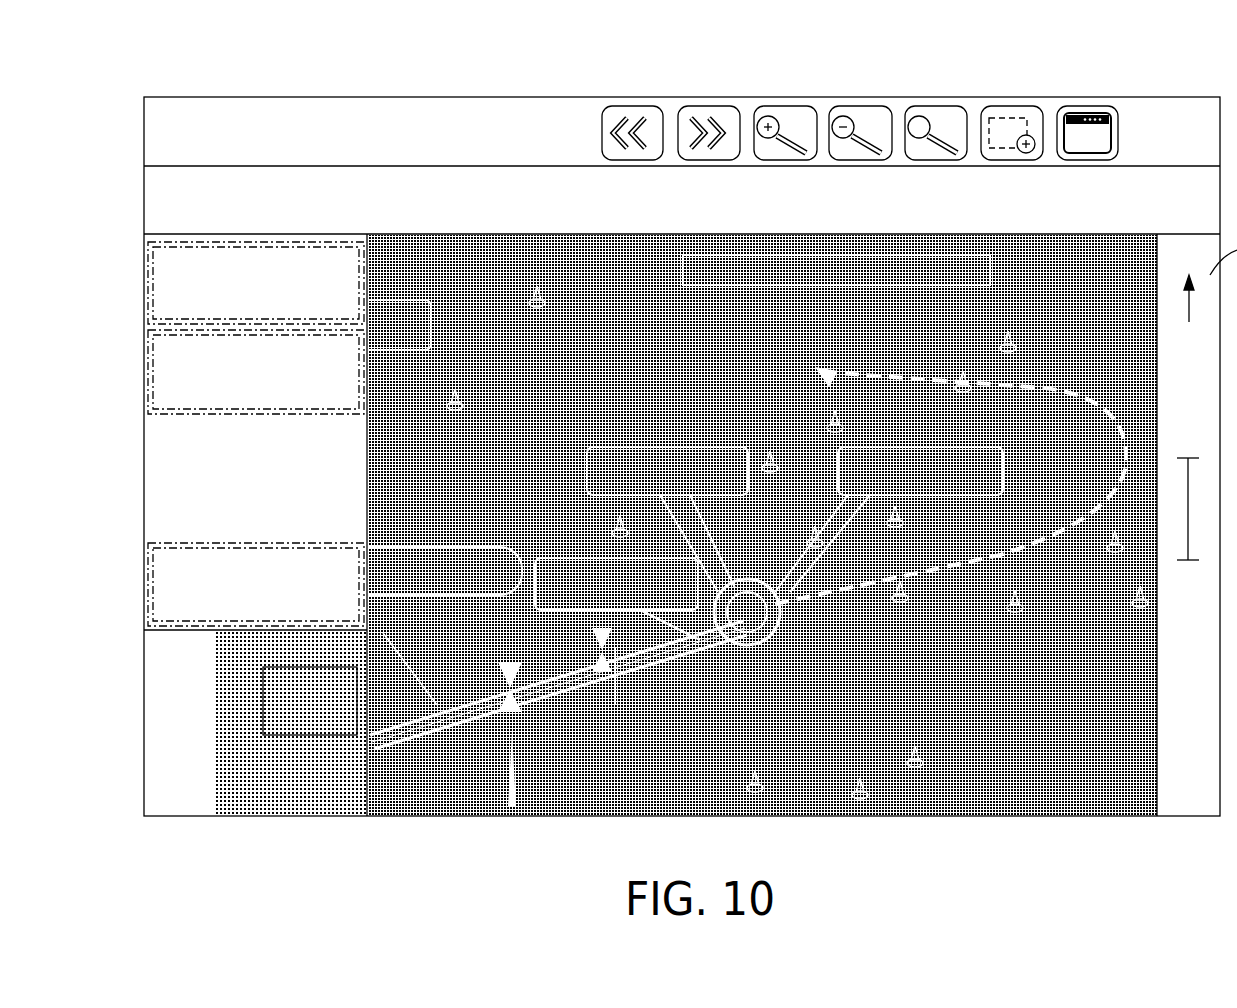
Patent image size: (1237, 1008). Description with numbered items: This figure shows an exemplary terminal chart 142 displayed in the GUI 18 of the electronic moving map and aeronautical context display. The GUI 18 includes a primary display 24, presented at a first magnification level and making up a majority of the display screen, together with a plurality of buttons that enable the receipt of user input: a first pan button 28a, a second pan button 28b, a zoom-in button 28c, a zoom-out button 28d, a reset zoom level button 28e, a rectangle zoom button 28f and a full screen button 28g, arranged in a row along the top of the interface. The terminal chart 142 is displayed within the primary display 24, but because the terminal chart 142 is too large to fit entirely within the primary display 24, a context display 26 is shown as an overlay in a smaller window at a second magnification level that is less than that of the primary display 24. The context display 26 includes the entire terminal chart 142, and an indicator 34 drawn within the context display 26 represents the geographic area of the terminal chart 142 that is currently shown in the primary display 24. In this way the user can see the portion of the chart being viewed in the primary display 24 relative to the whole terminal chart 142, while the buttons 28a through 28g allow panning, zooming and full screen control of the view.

The GUI 18 is at (307, 86).
The primary display 24 is at (530, 820).
The context display 26 is at (309, 820).
The indicator 34 is at (287, 713).
The first pan button 28a is at (633, 110).
The second pan button 28b is at (708, 110).
The zoom-in button 28c is at (783, 110).
The zoom-out button 28d is at (860, 110).
The reset zoom level button 28e is at (933, 110).
The rectangle zoom button 28f is at (1012, 110).
The full screen button 28g is at (1097, 110).
The terminal chart 142 is at (1015, 818).